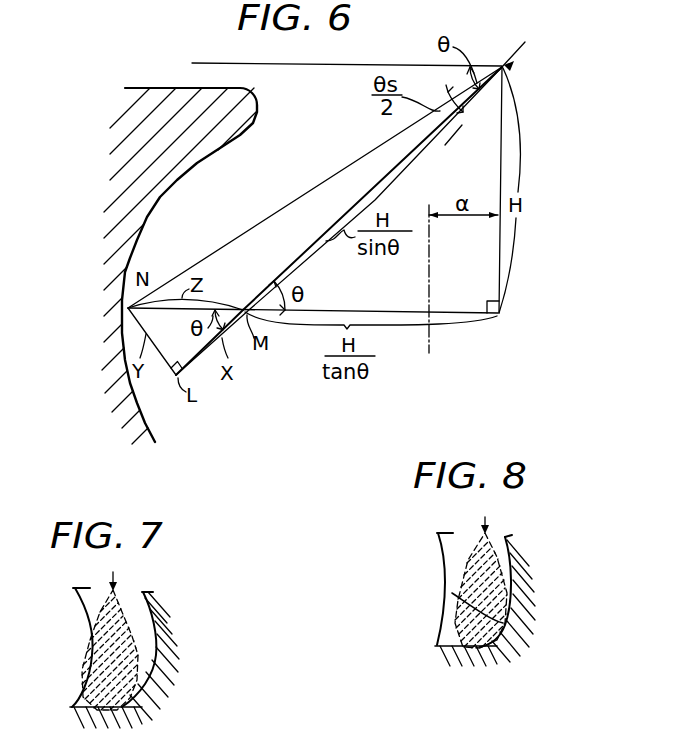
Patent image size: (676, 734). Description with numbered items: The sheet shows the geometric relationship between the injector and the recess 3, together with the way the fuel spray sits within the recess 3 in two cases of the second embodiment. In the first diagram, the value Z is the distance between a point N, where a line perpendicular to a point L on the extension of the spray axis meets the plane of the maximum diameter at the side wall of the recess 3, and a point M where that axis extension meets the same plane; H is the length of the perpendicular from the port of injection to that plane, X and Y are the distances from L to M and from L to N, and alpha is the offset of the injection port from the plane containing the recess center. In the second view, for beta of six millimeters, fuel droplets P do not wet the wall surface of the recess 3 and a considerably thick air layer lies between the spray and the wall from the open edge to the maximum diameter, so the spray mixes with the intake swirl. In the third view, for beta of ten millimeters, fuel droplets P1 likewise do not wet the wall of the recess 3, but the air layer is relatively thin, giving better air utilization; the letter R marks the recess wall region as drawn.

In FIG. 6, the recess 3 is at (167, 228).
In FIG. 7, the recess 3 is at (153, 672).
In FIG. 8, the recess 3 is at (505, 622).
In FIG. 7, the reflector R is at (88, 620).
In FIG. 8, the reflector R is at (443, 573).
In FIG. 7, the fuel droplets P is at (125, 650).
In FIG. 8, the fuel droplets P1 is at (510, 593).